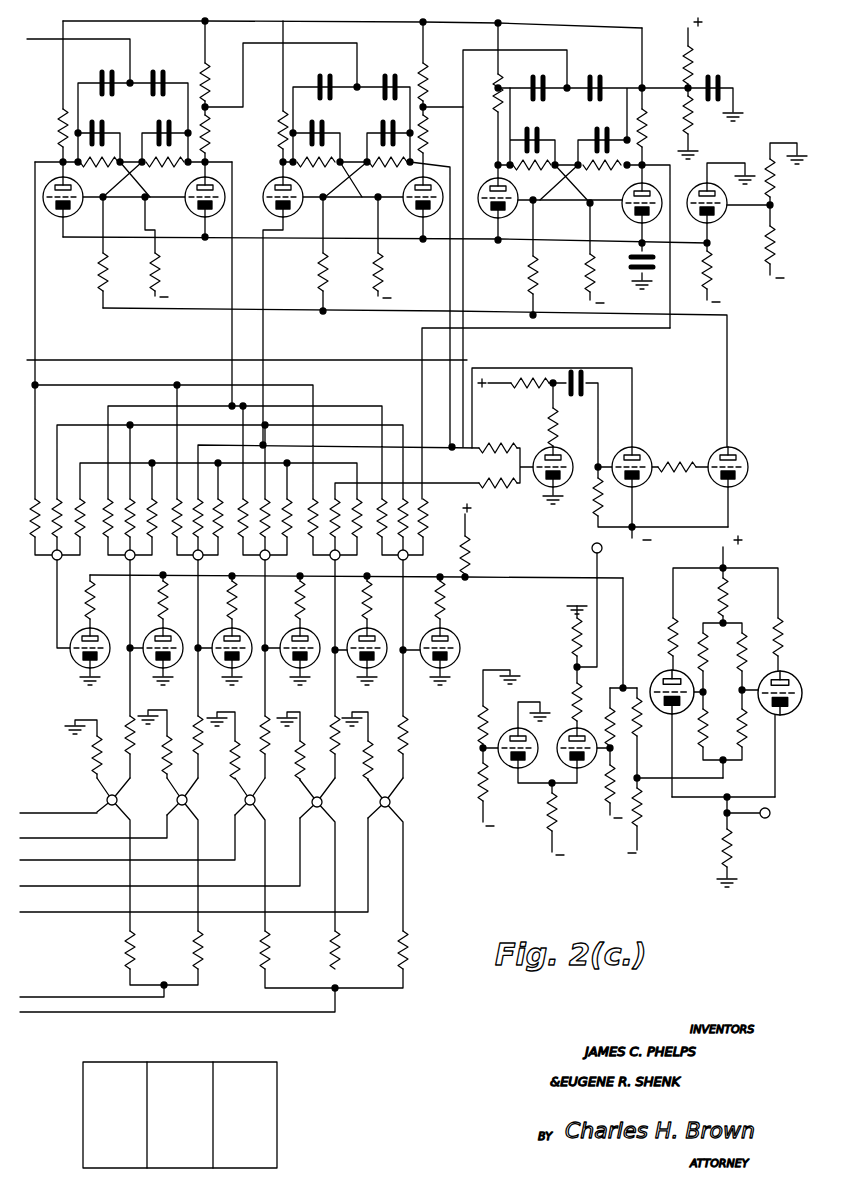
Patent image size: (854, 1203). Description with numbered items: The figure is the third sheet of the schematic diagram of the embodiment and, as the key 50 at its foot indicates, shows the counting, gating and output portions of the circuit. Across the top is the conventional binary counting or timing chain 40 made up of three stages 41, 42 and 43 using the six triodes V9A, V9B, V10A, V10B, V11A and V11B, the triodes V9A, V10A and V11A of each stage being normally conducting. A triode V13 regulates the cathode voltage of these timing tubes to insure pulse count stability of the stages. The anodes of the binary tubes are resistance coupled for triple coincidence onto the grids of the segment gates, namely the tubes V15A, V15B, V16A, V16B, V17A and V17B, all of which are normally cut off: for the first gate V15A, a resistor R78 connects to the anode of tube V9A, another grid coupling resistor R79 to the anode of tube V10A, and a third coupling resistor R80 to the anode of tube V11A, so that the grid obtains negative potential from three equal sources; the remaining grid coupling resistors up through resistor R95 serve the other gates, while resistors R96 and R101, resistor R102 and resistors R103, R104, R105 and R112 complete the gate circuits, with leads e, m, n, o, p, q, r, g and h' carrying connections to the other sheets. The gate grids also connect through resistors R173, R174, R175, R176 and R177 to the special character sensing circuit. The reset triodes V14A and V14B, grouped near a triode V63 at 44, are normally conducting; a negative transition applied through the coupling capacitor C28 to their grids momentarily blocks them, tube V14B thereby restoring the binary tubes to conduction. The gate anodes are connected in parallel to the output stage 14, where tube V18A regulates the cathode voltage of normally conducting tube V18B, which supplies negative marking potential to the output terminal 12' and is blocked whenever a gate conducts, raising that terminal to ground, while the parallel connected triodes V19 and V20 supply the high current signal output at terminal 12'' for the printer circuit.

The binary counting or timing chain 40 is at (400, 57).
The first binary stage 41 is at (139, 120).
The second binary stage 42 is at (361, 134).
The third binary stage 43 is at (572, 134).
The output amplifier stage 44 is at (687, 400).
The output stage 14 is at (653, 604).
The gating bank 50 is at (241, 1054).
The coupling capacitor C28 is at (575, 372).
The output terminal 12' is at (611, 560).
The current output terminal 12'' is at (768, 799).
The triode V9A is at (52, 226).
The triode V9B is at (192, 228).
The triode V10A is at (275, 228).
The triode V10B is at (413, 228).
The triode V11A is at (490, 228).
The triode V11B is at (628, 222).
The triode V13 is at (706, 226).
The vacuum tube V63 is at (538, 450).
The reset triode V14A is at (668, 436).
The reset triode V14B is at (768, 436).
The first segment gate tube V15A is at (75, 660).
The segment gate tube V15B is at (180, 645).
The segment gate tube V16A is at (218, 666).
The segment gate tube V16B is at (288, 666).
The segment gate tube V17A is at (355, 666).
The segment gate tube V17B is at (480, 640).
The output triode V18A is at (535, 705).
The output triode V18B is at (582, 775).
The parallel connected triode V19 is at (672, 716).
The parallel connected triode V20 is at (790, 718).
The resistor R78 is at (34, 500).
The grid coupling resistor R79 is at (56, 500).
The coupling resistor R80 is at (79, 500).
The resistor R95 is at (432, 520).
The resistor R96 is at (84, 603).
The resistor R101 is at (448, 616).
The resistor R102 is at (470, 545).
The resistor R103 is at (92, 768).
The resistor R104 is at (125, 718).
The resistor R105 is at (162, 768).
The resistor R112 is at (410, 725).
The resistor R173 is at (125, 958).
The resistor R174 is at (190, 960).
The resistor R175 is at (258, 960).
The resistor R176 is at (325, 960).
The resistor R177 is at (395, 962).
The input lead e is at (78, 46).
The input lead m is at (247, 348).
The input lead n is at (58, 801).
The input lead o is at (93, 826).
The input lead p is at (127, 837).
The input lead q is at (160, 852).
The input lead r is at (194, 865).
The input lead g is at (109, 983).
The input lead h' is at (211, 1001).